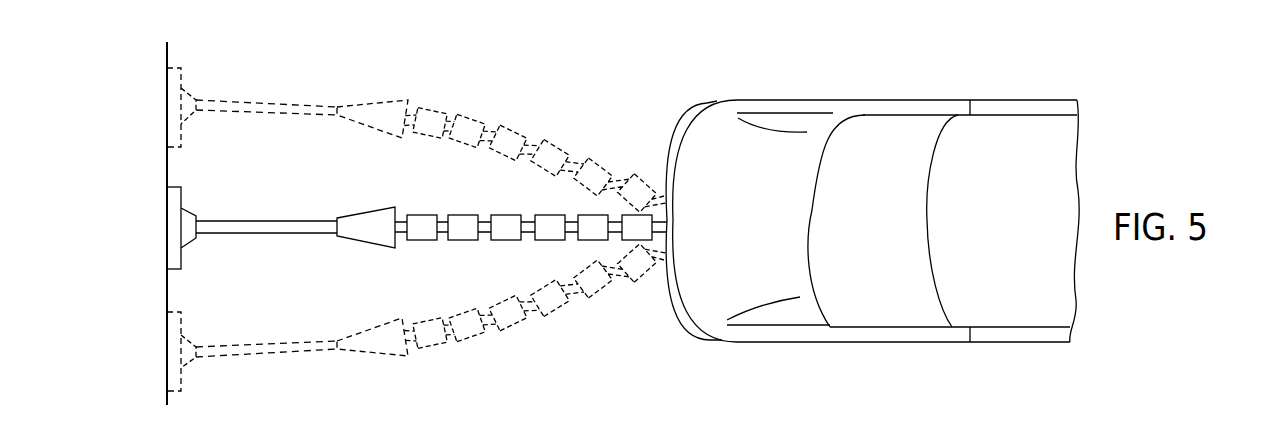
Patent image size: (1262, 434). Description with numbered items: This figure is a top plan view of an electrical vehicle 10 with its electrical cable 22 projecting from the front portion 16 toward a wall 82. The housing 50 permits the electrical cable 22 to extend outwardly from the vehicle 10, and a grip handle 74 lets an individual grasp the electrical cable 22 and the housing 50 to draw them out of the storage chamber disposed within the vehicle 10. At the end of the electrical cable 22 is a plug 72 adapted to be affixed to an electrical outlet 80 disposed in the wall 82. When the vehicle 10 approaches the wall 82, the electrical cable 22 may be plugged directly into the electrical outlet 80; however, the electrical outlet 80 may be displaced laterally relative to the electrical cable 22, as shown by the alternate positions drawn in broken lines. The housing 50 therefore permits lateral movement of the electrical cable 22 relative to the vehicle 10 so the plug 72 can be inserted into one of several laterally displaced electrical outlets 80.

The electrical vehicle 10 is at (898, 92).
The front portion 16 is at (665, 192).
The electrical cable 22 is at (255, 224).
The housing 50 is at (475, 250).
The plug 72 is at (188, 216).
The grip handle 74 is at (362, 221).
The electrical outlet 80 is at (183, 72).
The wall 82 is at (172, 155).